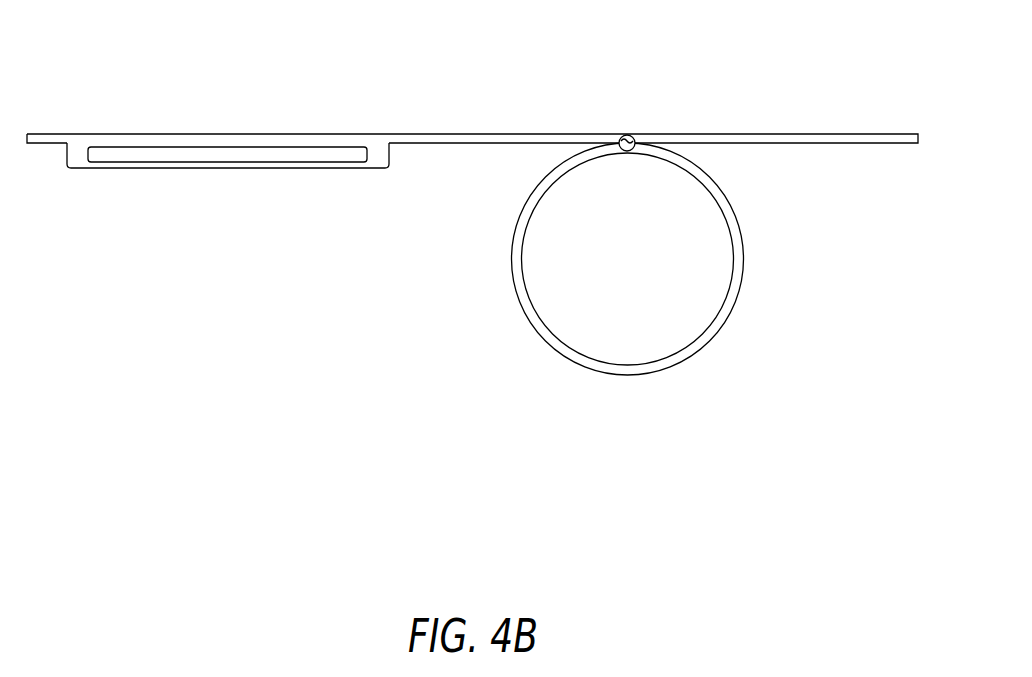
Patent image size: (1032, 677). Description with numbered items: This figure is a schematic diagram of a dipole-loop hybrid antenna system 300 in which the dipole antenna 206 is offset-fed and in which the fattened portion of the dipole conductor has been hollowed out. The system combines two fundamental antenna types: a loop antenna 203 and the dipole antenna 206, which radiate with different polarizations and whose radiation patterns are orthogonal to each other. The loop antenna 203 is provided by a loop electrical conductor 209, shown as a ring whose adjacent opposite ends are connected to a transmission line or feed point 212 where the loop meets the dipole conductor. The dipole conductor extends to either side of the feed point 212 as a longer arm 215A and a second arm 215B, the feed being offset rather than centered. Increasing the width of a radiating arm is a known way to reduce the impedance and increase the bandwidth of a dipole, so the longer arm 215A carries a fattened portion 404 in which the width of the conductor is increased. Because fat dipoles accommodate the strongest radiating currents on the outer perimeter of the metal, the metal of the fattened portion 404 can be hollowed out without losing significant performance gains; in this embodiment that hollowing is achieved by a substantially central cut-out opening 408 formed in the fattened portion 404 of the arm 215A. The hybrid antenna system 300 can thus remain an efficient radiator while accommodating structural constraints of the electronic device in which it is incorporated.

The dipole antenna 206 is at (722, 56).
The longer arm of the dipole conductor 215A is at (447, 134).
The arm of the dipole conductor 215B is at (848, 133).
The feed point 212 is at (623, 133).
The loop antenna 203 is at (474, 289).
The loop electrical conductor 209 is at (568, 347).
The dipole-loop hybrid antenna system 300 is at (320, 242).
The fattened portion 404 is at (146, 140).
The central cut-out opening 408 is at (206, 178).